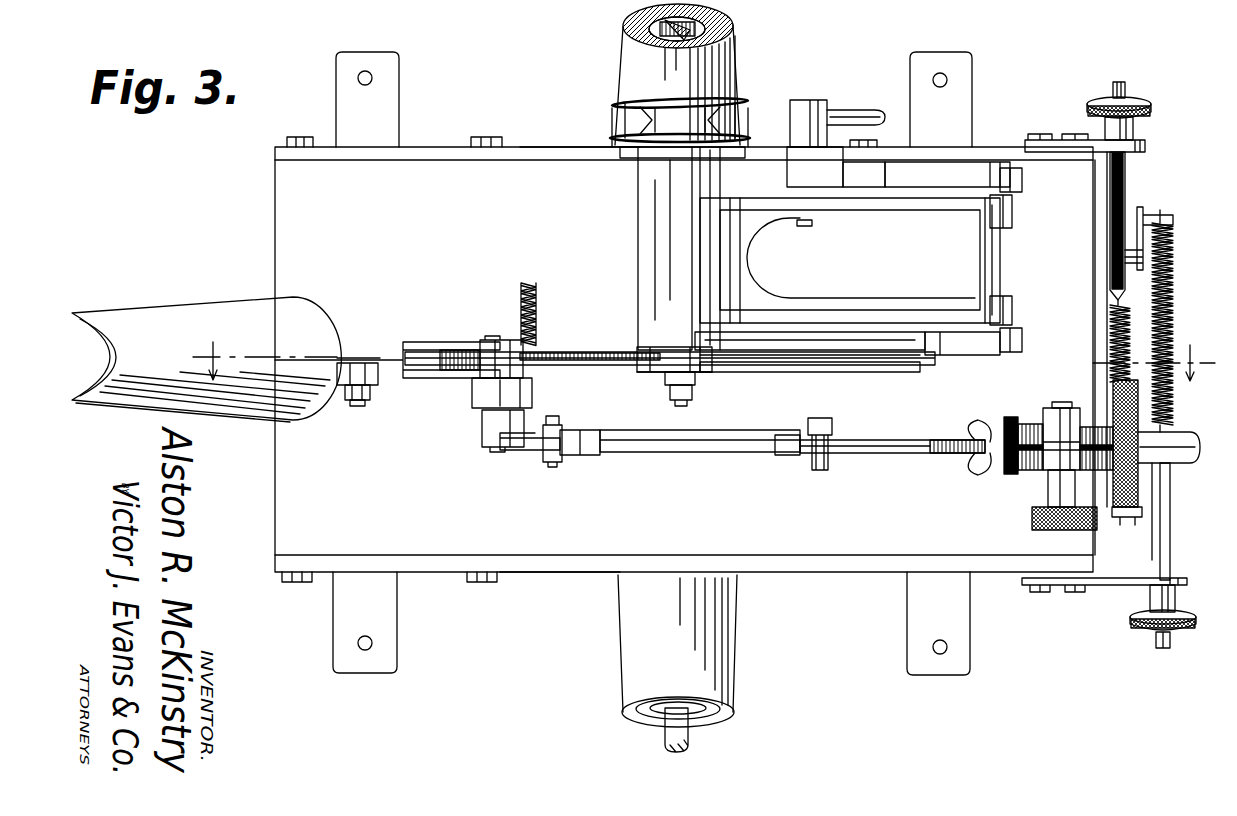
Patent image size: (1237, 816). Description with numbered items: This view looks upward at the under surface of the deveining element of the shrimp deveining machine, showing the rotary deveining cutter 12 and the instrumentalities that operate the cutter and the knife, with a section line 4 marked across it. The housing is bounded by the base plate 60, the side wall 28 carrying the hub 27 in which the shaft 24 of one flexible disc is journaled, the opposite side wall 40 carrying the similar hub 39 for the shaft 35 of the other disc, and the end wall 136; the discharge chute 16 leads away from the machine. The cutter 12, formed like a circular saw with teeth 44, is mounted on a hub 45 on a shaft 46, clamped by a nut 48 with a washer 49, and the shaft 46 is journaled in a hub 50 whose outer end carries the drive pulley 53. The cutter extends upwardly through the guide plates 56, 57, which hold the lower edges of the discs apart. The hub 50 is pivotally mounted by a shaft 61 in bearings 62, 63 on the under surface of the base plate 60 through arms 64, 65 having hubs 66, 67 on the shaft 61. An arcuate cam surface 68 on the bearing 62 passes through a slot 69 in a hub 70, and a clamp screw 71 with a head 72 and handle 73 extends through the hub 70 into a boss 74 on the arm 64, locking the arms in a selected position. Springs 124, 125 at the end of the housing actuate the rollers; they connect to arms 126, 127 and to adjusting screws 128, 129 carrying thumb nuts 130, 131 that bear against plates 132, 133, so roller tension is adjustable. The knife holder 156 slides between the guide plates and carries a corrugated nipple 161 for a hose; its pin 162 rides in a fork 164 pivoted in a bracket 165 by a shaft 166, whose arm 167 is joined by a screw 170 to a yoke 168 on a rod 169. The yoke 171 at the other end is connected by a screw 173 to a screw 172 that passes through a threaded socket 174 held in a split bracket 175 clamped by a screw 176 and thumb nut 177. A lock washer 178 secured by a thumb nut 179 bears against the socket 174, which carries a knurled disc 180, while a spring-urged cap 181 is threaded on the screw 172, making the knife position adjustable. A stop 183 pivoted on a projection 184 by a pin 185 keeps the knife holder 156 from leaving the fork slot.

The section line 4 is at (702, 358).
The deveining cutter 12 is at (750, 372).
The discharge chute 16 is at (222, 300).
The shaft 24 is at (658, 752).
The hub 27 is at (733, 648).
The side wall 28 is at (560, 574).
The shaft 35 is at (705, 20).
The hub 39 is at (630, 60).
The side wall 40 is at (572, 148).
The teeth 44 is at (600, 352).
The hub 45 is at (668, 338).
The shaft 46 is at (680, 400).
The nut 48 is at (665, 385).
The washer 49 is at (640, 372).
The hub 50 is at (638, 222).
The pulley 53 is at (735, 105).
The guide plate 56 is at (830, 372).
The guide plate 57 is at (828, 342).
The base plate 60 is at (275, 215).
The shaft 61 is at (1000, 255).
The bearing 62 is at (1022, 180).
The bearing 63 is at (1022, 342).
The arm 64 is at (933, 181).
The arm 65 is at (920, 335).
The hub 66 is at (1012, 212).
The hub 67 is at (1012, 312).
The arcuate cam surface 68 is at (875, 165).
The slot 69 is at (843, 178).
The hub 70 is at (787, 175).
The clamp screw 71 is at (805, 226).
The head 72 is at (790, 125).
The handle 73 is at (855, 110).
The boss 74 is at (790, 218).
The spring 124 is at (1134, 303).
The spring 125 is at (1172, 300).
The arm 126 is at (1130, 525).
The arm 127 is at (1150, 200).
The adjusting screw 128 is at (1127, 168).
The adjusting screw 129 is at (1170, 522).
The thumb nut 130 is at (1148, 104).
The thumb nut 131 is at (1195, 626).
The plate 132 is at (1145, 145).
The plate 133 is at (1180, 578).
The end wall 136 is at (1093, 278).
The knife holder 156 is at (440, 342).
The corrugated nipple 161 is at (536, 300).
The pin 162 is at (455, 350).
The fork 164 is at (487, 340).
The bracket 165 is at (472, 395).
The shaft 166 is at (490, 452).
The arm 167 is at (523, 450).
The yoke 168 is at (580, 455).
The rod 169 is at (665, 452).
The screw 170 is at (550, 467).
The yoke 171 is at (785, 455).
The screw 172 is at (918, 432).
The screw 173 is at (820, 470).
The socket 174 is at (1030, 470).
The split bracket 175 is at (1043, 418).
The screw 176 is at (1062, 402).
The thumb nut 177 is at (1032, 520).
The lock washer 178 is at (1008, 475).
The thumb nut 179 is at (970, 470).
The knurled disc 180 is at (1130, 358).
The cap 181 is at (1185, 432).
The stop 183 is at (350, 358).
The projection 184 is at (375, 395).
The pin 185 is at (355, 406).